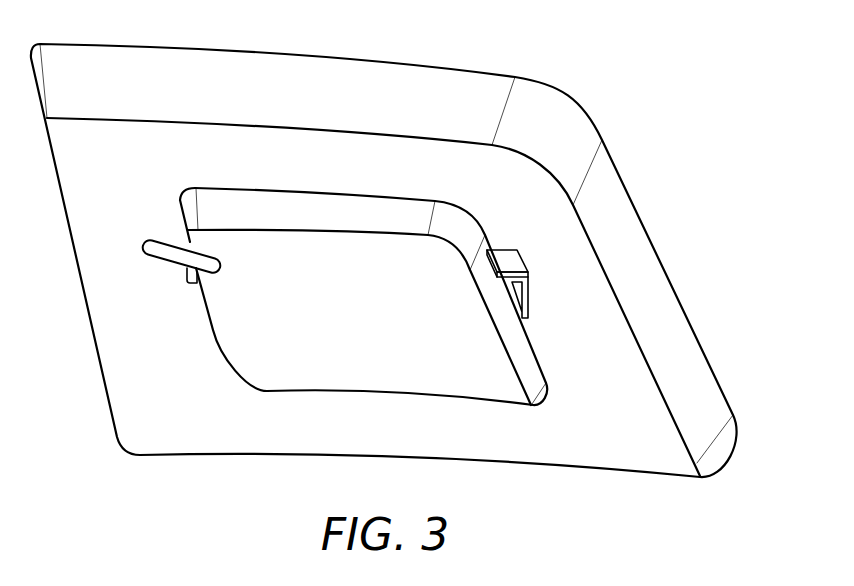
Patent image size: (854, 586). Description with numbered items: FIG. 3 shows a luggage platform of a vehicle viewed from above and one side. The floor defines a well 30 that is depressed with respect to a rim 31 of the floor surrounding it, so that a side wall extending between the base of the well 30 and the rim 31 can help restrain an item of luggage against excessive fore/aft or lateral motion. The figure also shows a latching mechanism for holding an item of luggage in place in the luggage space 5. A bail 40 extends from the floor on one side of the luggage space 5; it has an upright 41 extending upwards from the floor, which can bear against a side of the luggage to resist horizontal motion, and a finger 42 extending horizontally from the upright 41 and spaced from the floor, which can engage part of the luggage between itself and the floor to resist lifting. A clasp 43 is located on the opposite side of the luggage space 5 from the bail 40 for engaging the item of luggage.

The luggage space 5 is at (326, 312).
The well 30 is at (340, 370).
The rim 31 is at (230, 137).
The bail 40 is at (510, 251).
The upright 41 is at (530, 303).
The finger 42 is at (487, 270).
The clasp 43 is at (173, 257).